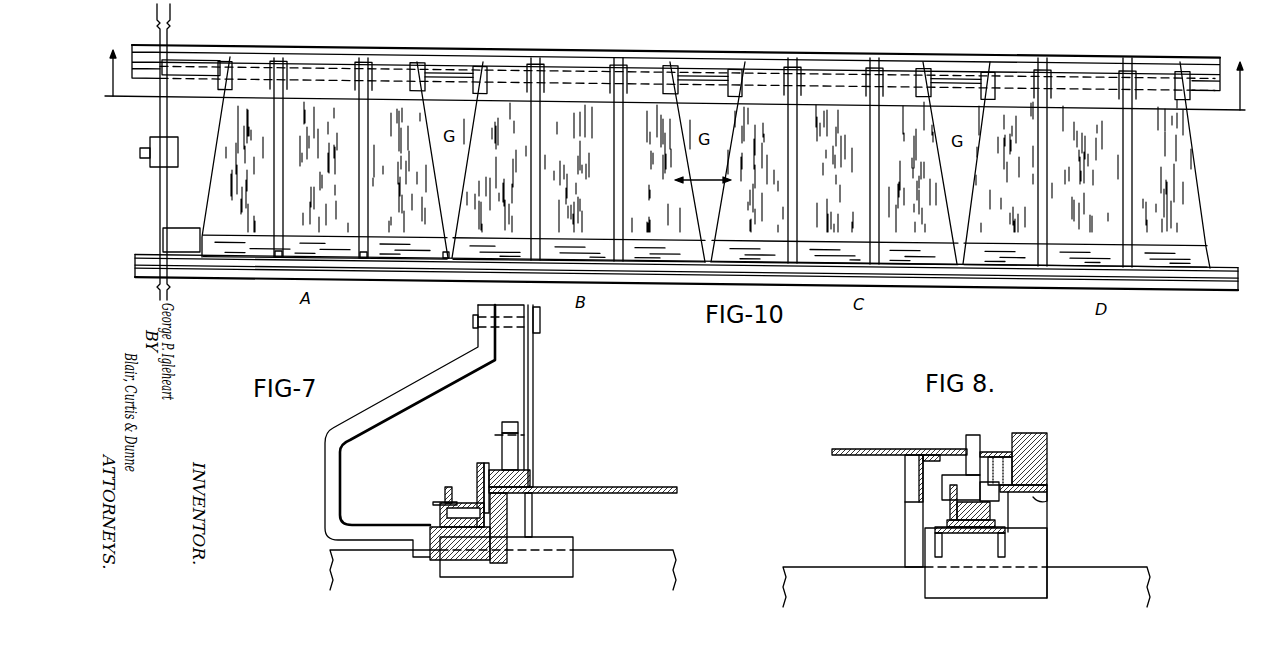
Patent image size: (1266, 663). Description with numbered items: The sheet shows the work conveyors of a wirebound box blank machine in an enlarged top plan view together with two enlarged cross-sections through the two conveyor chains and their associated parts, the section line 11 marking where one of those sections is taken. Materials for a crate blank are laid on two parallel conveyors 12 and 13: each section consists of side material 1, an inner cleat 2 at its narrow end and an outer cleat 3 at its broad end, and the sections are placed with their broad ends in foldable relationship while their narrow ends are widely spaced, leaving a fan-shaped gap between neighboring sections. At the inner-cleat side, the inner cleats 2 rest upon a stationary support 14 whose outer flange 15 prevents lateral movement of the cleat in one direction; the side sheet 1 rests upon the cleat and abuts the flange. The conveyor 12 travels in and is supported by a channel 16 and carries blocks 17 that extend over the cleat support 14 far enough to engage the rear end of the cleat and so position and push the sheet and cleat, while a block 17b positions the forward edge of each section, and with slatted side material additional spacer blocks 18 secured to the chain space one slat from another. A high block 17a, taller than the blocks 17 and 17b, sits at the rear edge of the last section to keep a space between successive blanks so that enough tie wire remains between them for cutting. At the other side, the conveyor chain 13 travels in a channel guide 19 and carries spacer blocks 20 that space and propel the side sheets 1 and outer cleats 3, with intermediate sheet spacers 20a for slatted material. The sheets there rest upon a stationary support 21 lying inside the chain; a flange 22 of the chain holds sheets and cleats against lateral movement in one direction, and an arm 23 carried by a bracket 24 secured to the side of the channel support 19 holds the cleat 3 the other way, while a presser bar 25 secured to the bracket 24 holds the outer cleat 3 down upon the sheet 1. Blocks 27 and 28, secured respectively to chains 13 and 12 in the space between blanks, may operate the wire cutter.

In FIG. 10, the side material 1 is at (213, 158).
In FIG. 7, the side material 1 is at (637, 487).
In FIG. 8, the side material 1 is at (858, 449).
In FIG. 10, the inner cleat 2 is at (1025, 70).
In FIG. 8, the inner cleat 2 is at (1047, 460).
In FIG. 10, the outer cleat 3 is at (1212, 250).
In FIG. 7, the outer cleat 3 is at (533, 493).
In FIG. 10, the section line 11 is at (677, 69).
In FIG. 8, the conveyor 12 is at (997, 517).
In FIG. 7, the conveyor chain 13 is at (447, 497).
In FIG. 8, the stationary support 14 is at (1050, 500).
In FIG. 8, the outer flange 15 is at (1047, 473).
In FIG. 8, the channel 16 is at (985, 525).
In FIG. 10, the blocks 17 is at (418, 65).
In FIG. 8, the blocks 17 is at (968, 440).
In FIG. 10, the high block 17a is at (1183, 77).
In FIG. 10, the block 17b is at (480, 65).
In FIG. 10, the spacer blocks 18 is at (280, 60).
In FIG. 7, the channel guide 19 is at (440, 520).
In FIG. 10, the spacer blocks 20 is at (447, 260).
In FIG. 7, the spacer blocks 20 is at (486, 477).
In FIG. 10, the intermediate sheet spacers 20a is at (277, 256).
In FIG. 7, the stationary support 21 is at (507, 520).
In FIG. 7, the flange 22 is at (477, 477).
In FIG. 7, the arm 23 is at (530, 462).
In FIG. 7, the bracket 24 is at (412, 392).
In FIG. 7, the presser bar 25 is at (512, 453).
In FIG. 10, the block 27 is at (182, 233).
In FIG. 10, the block 28 is at (190, 62).